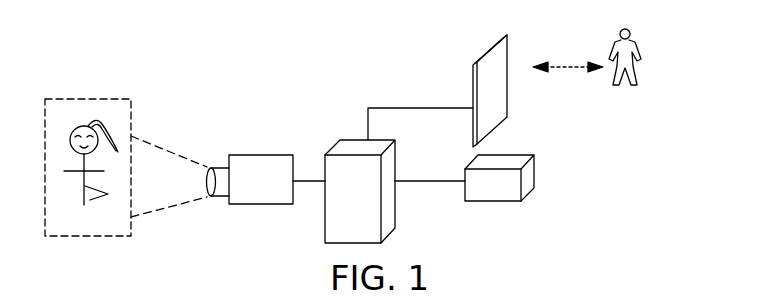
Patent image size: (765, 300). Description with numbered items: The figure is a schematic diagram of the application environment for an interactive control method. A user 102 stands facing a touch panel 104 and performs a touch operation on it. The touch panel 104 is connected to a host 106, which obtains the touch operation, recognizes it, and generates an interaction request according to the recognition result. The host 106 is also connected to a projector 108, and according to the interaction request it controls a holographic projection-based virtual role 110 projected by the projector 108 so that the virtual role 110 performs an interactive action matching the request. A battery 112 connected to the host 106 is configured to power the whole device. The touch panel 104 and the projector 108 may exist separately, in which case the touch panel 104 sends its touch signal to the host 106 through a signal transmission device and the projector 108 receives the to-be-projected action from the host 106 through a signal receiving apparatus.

The user 102 is at (632, 40).
The touch panel 104 is at (507, 35).
The host 106 is at (353, 140).
The projector 108 is at (237, 155).
The virtual role 110 is at (100, 98).
The battery 112 is at (520, 155).